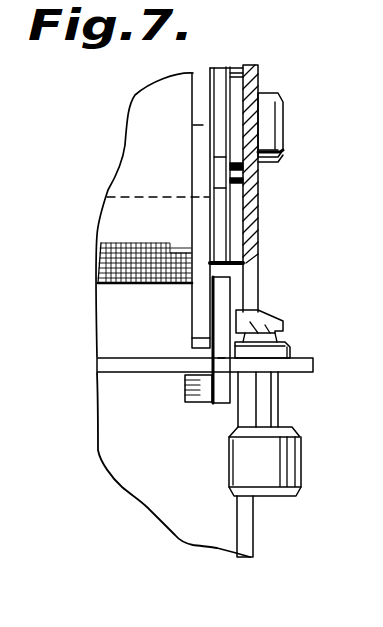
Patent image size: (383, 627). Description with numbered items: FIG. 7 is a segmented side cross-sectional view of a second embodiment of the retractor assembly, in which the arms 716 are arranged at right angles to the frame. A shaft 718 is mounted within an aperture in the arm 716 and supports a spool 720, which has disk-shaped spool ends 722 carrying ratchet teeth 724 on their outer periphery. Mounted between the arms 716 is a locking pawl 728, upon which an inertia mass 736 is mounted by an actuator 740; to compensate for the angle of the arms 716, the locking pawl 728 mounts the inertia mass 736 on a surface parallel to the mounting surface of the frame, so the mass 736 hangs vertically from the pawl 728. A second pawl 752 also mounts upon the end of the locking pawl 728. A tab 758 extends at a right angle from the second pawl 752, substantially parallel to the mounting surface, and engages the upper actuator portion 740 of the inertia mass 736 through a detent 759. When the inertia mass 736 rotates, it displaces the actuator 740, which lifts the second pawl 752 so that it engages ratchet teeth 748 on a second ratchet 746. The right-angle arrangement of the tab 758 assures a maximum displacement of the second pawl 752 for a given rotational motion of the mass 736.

The arms 716 is at (250, 82).
The shaft 718 is at (280, 127).
The spool 720 is at (128, 211).
The spool ends 722 is at (198, 97).
The ratchet teeth 724 is at (198, 127).
The locking pawl 728 is at (132, 368).
The inertia mass 736 is at (260, 472).
The actuator 740 is at (295, 357).
The second ratchet 746 is at (217, 206).
The ratchet teeth 748 is at (213, 240).
The second pawl 752 is at (223, 292).
The tab 758 is at (277, 322).
The detent 759 is at (228, 334).